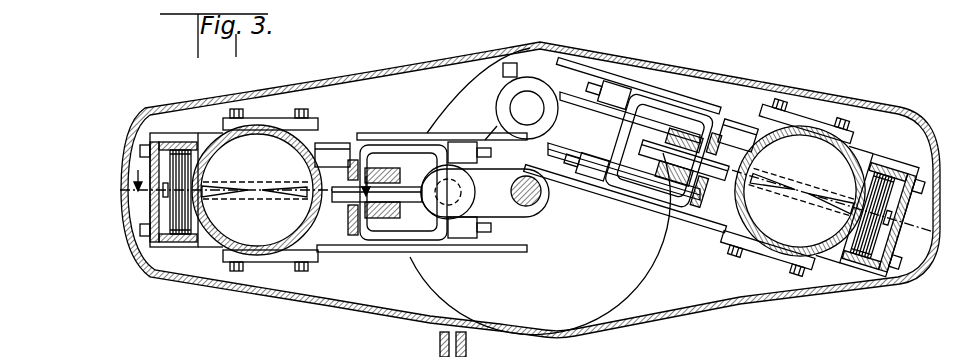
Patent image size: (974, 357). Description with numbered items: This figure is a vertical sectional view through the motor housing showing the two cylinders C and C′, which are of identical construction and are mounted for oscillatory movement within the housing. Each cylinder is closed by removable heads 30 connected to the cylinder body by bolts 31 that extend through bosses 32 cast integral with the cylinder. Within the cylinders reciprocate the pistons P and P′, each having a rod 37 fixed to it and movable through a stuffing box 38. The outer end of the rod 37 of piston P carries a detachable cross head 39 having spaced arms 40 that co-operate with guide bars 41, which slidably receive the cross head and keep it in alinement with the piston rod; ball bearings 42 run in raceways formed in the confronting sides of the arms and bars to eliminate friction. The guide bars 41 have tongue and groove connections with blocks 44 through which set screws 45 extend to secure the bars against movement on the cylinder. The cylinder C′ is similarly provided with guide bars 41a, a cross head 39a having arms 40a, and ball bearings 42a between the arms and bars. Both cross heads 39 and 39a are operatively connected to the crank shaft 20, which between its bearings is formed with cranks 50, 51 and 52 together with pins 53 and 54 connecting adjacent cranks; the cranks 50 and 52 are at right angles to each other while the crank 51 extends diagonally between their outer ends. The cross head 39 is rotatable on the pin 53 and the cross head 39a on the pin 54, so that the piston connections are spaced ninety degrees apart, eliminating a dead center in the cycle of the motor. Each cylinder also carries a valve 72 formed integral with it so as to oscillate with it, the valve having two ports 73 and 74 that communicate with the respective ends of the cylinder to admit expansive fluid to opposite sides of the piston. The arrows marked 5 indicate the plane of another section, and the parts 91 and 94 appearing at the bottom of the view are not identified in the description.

The section line 5- 5 is at (251, 176).
The crank shaft 20 is at (537, 205).
The removable heads 30 is at (130, 213).
The bolts 31 is at (135, 245).
The bosses 32 is at (321, 150).
The rods 37 is at (350, 205).
The stuffing boxes 38 is at (378, 220).
The cross head 39 is at (467, 235).
The cross head 39a is at (543, 75).
The arms 40 is at (407, 143).
The arms 40a is at (580, 173).
The guide bars 41 is at (380, 133).
The guide bars 41a is at (637, 87).
The ball bearings 42 is at (443, 140).
The ball bearings 42a is at (593, 77).
The blocks 44 is at (293, 257).
The set screws 45 is at (232, 116).
The crank 50 is at (498, 207).
The crank 51 is at (482, 130).
The crank 52 is at (548, 150).
The pin 53 is at (463, 187).
The pin 54 is at (565, 100).
The valve 72 is at (526, 191).
The port 73 is at (244, 187).
The port 74 is at (272, 187).
The valve stem 91 is at (440, 333).
The valve body 94 is at (466, 352).
The cylinder C is at (201, 98).
The cylinder C' is at (902, 110).
The piston P is at (174, 231).
The piston P' is at (842, 160).